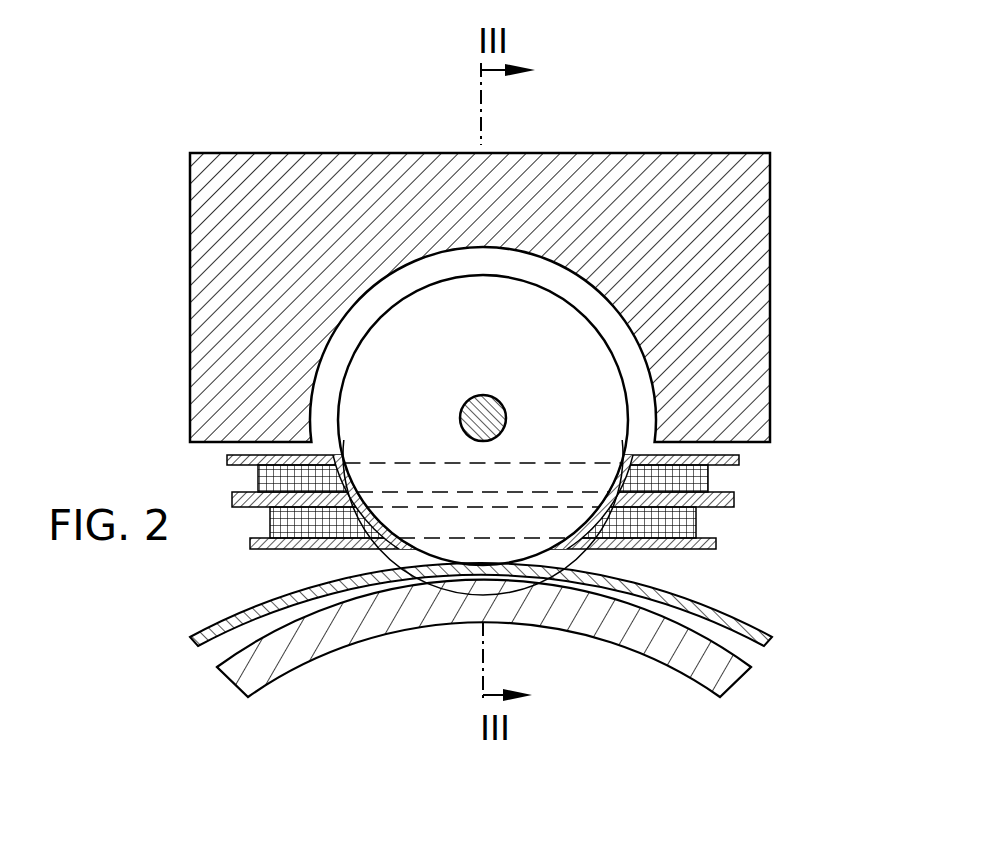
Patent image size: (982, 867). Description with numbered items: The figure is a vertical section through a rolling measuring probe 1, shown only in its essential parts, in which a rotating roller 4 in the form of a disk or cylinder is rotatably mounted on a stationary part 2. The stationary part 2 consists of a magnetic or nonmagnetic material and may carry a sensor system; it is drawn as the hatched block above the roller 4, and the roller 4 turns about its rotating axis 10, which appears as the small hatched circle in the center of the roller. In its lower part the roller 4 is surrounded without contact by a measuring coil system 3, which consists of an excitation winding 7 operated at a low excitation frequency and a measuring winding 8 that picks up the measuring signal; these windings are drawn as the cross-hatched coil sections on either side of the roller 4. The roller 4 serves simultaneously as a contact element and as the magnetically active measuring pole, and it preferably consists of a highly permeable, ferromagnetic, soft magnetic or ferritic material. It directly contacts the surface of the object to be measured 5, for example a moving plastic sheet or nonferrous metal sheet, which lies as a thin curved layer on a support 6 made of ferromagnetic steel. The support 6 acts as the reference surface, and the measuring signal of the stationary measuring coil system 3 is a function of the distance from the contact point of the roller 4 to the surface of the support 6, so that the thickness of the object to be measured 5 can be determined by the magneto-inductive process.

The measuring probe 1 is at (710, 137).
The stationary part 2 is at (765, 195).
The measuring coil system 3 is at (534, 420).
The roller 4 is at (608, 343).
The object to be measured 5 is at (727, 610).
The support 6 is at (738, 686).
The excitation winding 7 is at (710, 473).
The measuring winding 8 is at (700, 522).
The rotating axis 10 is at (497, 397).